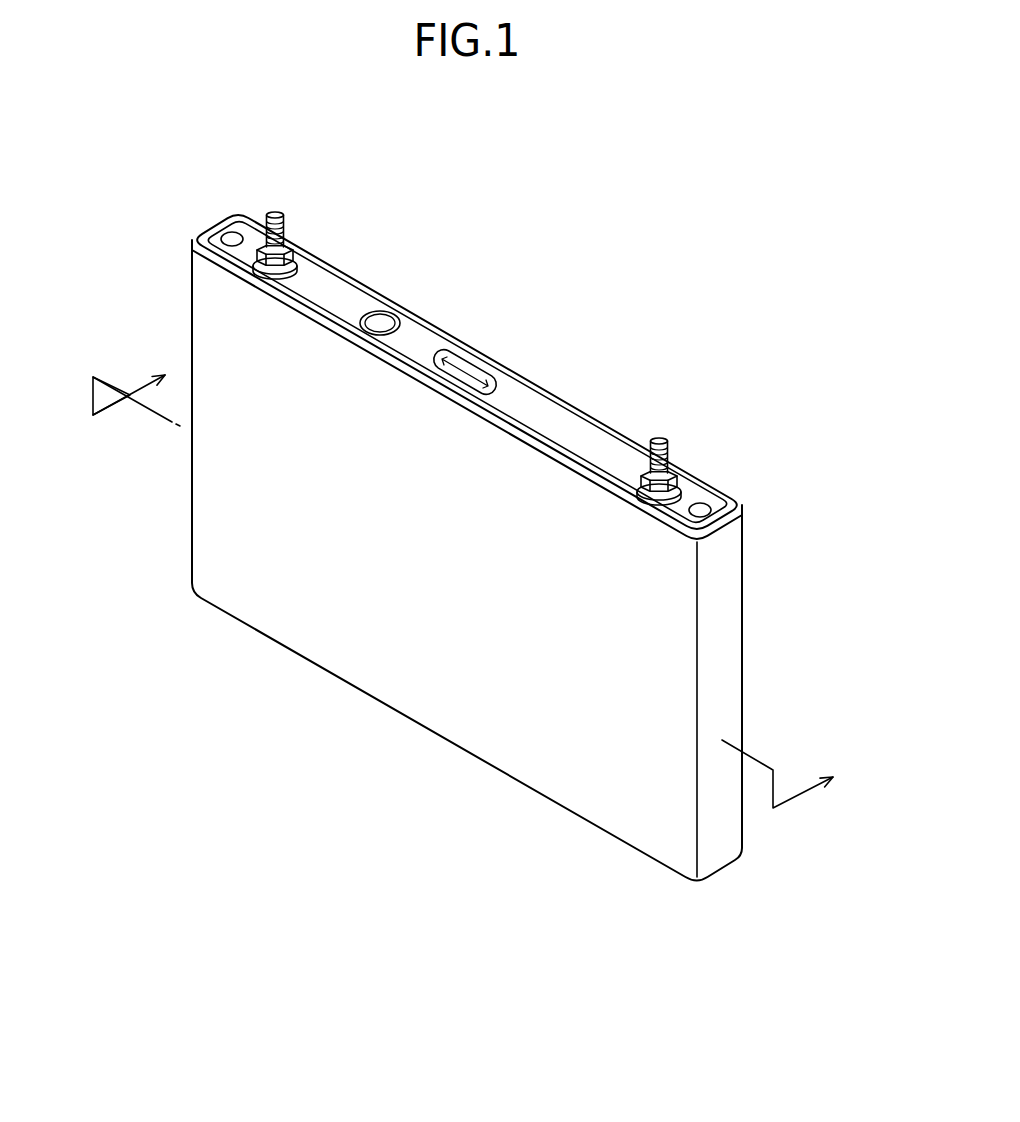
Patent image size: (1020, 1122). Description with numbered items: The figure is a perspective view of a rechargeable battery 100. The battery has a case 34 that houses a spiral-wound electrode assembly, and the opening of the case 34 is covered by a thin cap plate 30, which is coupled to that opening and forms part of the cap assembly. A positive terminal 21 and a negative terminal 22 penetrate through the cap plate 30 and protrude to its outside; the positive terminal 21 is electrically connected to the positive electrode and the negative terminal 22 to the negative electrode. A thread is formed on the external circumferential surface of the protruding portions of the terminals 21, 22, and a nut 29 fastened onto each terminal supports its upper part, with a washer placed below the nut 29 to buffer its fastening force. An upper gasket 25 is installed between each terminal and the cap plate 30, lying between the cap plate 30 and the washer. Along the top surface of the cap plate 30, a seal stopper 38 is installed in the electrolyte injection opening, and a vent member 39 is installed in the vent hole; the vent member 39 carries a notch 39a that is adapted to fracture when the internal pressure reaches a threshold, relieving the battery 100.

The rechargeable battery 100 is at (560, 373).
The positive terminal 21 is at (272, 213).
The negative terminal 22 is at (659, 439).
The upper gasket 25 is at (684, 495).
The nut 29 is at (680, 466).
The cap plate 30 is at (432, 326).
The case 34 is at (413, 700).
The seal stopper 38 is at (381, 320).
The vent member 39 is at (463, 369).
The notch 39a is at (473, 380).